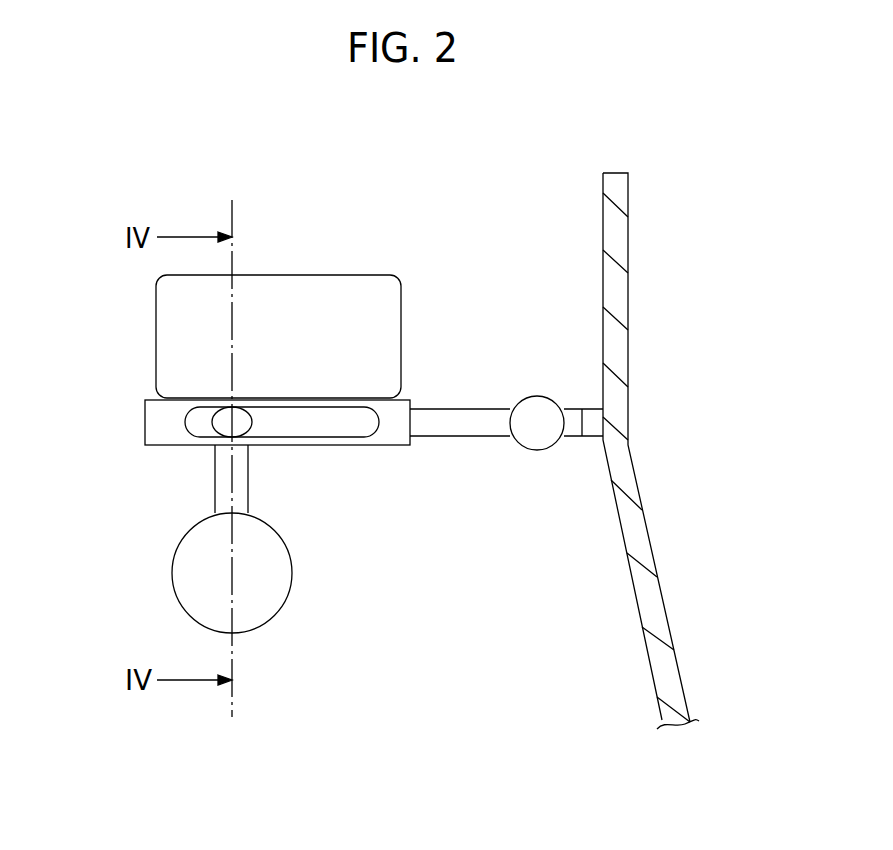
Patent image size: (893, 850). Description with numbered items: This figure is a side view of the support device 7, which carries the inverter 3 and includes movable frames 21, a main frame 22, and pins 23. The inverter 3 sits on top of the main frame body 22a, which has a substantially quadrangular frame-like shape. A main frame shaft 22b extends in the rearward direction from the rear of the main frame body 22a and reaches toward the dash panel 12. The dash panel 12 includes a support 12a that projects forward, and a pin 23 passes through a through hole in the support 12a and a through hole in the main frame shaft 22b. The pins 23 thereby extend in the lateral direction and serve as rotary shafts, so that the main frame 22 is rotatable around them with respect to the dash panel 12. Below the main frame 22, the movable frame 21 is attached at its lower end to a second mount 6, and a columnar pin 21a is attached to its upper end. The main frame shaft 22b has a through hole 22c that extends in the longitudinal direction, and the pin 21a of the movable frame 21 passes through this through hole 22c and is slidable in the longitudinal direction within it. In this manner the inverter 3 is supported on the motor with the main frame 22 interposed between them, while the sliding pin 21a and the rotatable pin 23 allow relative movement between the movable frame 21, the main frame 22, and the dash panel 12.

The inverter 3 is at (297, 275).
The second mount 6 is at (197, 583).
The support device 7 is at (95, 352).
The dash panel 12 is at (622, 193).
The support 12a is at (591, 417).
The movable frame 21 is at (221, 475).
The pin 21a is at (221, 425).
The main frame 22 is at (408, 393).
The main frame body 22a is at (390, 447).
The main frame shaft 22b is at (437, 427).
The through hole 22c is at (352, 437).
The pin 23 is at (537, 437).